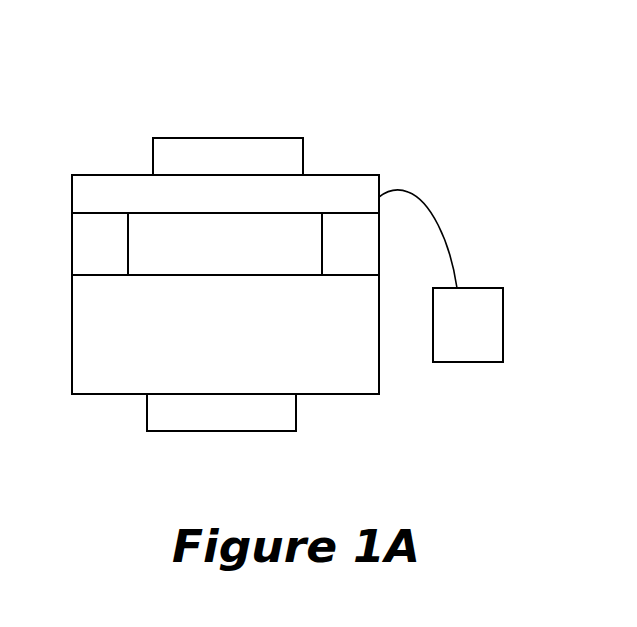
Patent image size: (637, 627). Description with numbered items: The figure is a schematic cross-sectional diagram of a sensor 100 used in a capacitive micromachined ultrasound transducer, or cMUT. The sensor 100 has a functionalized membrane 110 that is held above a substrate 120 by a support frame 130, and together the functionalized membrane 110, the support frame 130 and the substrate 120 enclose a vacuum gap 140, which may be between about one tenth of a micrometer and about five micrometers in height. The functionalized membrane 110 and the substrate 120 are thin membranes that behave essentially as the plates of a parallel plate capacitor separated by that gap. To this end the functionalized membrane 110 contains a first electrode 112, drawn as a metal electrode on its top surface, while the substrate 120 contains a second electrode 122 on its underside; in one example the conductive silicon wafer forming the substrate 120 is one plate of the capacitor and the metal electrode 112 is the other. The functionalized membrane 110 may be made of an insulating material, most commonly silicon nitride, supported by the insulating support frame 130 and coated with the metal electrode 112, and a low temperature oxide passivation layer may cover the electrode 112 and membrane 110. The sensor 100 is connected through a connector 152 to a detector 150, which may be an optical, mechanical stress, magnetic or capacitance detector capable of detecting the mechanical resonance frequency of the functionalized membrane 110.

The sensor 100 is at (80, 55).
The functionalized membrane 110 is at (225, 194).
The first electrode 112 is at (195, 150).
The substrate 120 is at (225, 334).
The second electrode 122 is at (265, 406).
The support frame 130 is at (225, 244).
The vacuum gap 140 is at (225, 244).
The detector 150 is at (468, 325).
The connector 152 is at (432, 196).